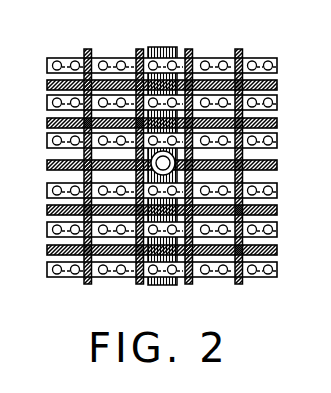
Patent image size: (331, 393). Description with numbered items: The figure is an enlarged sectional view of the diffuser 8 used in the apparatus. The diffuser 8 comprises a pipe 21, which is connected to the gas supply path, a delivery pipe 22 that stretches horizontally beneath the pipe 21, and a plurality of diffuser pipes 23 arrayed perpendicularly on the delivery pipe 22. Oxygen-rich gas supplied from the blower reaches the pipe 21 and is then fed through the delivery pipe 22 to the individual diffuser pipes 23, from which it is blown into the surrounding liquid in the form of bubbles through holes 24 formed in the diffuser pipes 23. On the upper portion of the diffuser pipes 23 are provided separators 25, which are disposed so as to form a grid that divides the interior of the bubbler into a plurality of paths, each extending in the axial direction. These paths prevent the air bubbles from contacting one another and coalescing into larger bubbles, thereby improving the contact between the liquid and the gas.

The diffuser 8 is at (167, 163).
The pipe 21 is at (260, 156).
The delivery pipe 22 is at (172, 39).
The diffuser pipes 23 is at (278, 58).
The holes 24 is at (75, 57).
The separators 25 is at (135, 50).